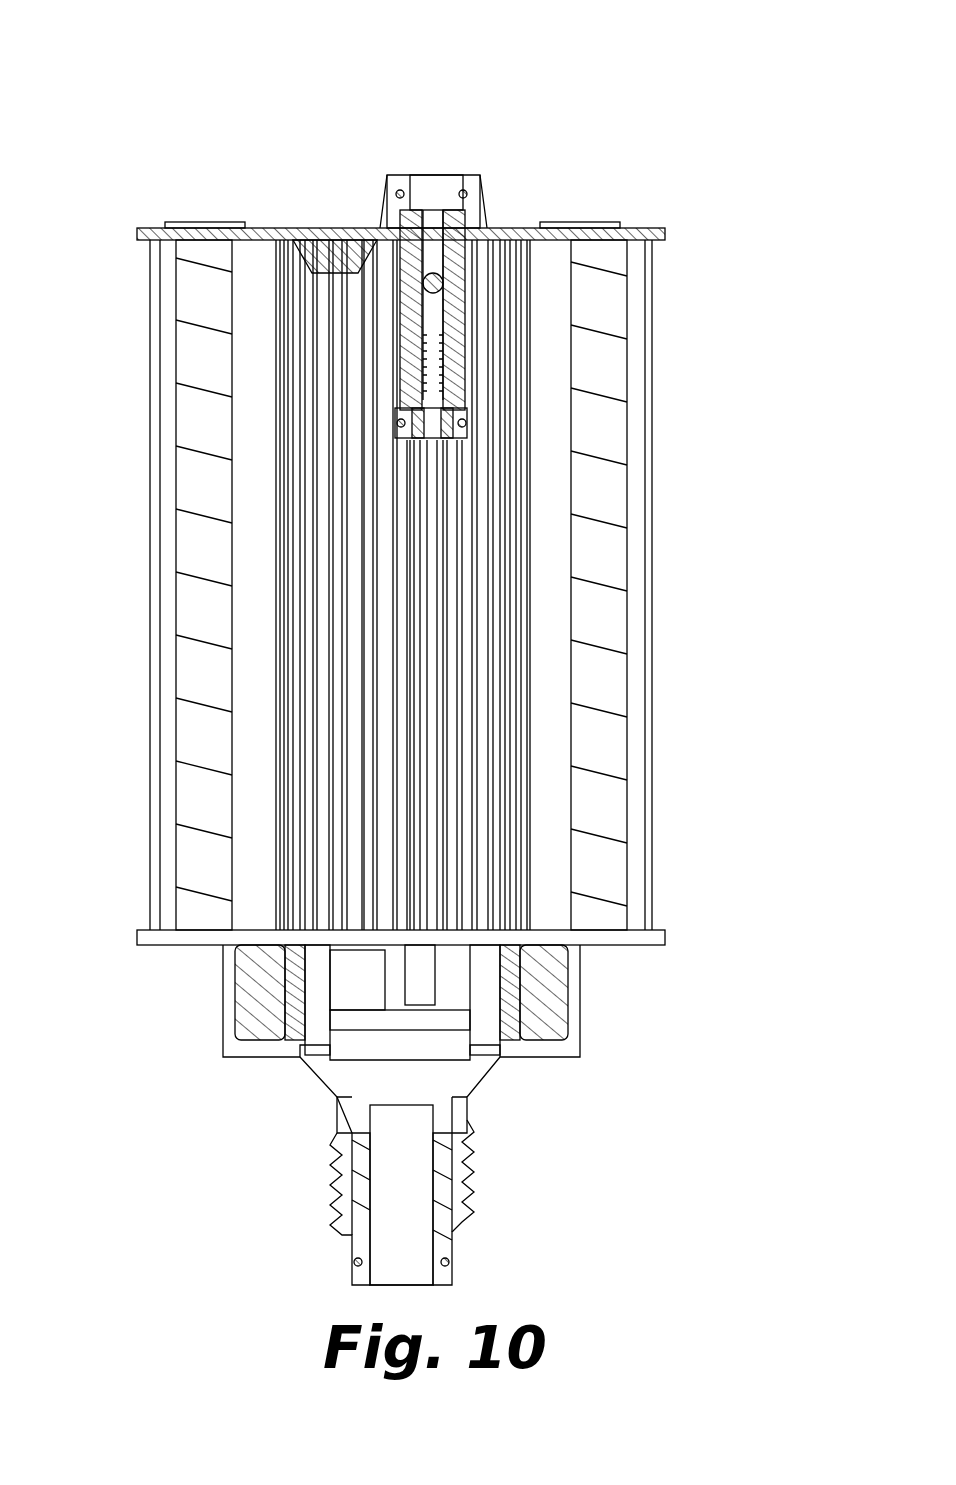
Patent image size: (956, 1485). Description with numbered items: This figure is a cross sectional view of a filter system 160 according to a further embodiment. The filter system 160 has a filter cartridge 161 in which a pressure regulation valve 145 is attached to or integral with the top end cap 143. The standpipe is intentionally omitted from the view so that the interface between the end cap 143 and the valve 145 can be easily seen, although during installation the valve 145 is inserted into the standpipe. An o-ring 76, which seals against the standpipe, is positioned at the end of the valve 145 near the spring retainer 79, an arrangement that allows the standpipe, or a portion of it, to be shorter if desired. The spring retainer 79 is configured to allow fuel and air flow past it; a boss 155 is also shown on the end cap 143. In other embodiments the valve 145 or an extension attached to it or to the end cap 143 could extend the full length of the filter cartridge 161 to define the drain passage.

The filter system 160 is at (596, 112).
The end cap 143 is at (586, 228).
The pressure regulation valve 145 is at (463, 175).
The o-ring 76 is at (412, 175).
The end cap boss 155 is at (323, 262).
The filter cartridge 161 is at (654, 318).
The spring retainer 79 is at (445, 443).